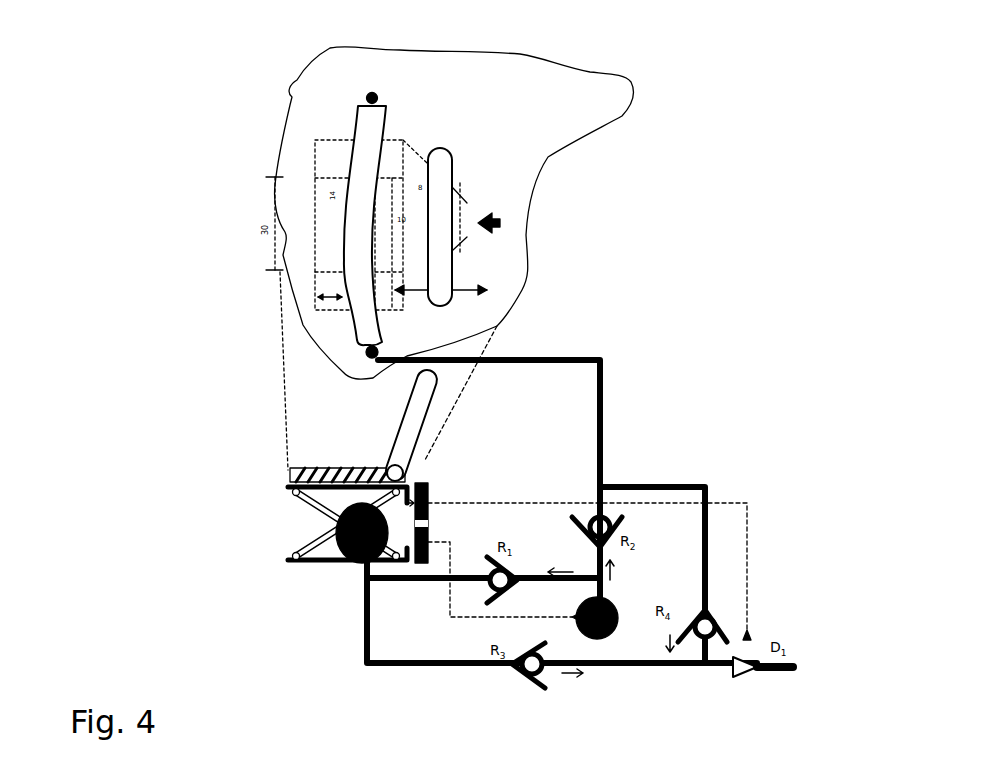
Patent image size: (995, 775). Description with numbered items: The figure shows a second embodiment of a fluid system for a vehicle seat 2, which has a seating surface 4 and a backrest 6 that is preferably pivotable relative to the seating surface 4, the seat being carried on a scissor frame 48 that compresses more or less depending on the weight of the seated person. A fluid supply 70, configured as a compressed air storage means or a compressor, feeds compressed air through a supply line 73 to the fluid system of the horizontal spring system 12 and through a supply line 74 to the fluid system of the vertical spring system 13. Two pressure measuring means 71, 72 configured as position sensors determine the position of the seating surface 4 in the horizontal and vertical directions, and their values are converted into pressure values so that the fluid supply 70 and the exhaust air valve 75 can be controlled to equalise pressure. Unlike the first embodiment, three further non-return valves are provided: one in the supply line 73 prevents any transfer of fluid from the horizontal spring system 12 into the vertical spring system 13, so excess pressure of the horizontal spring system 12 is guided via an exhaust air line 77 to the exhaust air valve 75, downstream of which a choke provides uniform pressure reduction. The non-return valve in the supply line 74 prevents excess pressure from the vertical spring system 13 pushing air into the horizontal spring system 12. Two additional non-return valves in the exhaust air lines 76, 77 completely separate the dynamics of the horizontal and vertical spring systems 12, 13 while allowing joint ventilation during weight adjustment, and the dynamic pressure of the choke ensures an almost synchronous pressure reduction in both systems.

The vehicle seat 2 is at (295, 515).
The seating surface 4 is at (330, 466).
The backrest 6 is at (417, 412).
The horizontal spring system 12 is at (632, 87).
The vertical spring system 13 is at (335, 563).
The scissor frame 48 is at (297, 524).
The fluid supply 70 is at (610, 603).
The pressure measuring means 71 is at (427, 483).
The pressure measuring means 72 is at (428, 525).
The supply line 73 is at (604, 440).
The supply line 74 is at (453, 578).
The exhaust air valve 75 is at (747, 677).
The exhaust air line 76 is at (390, 667).
The exhaust air line 77 is at (682, 484).